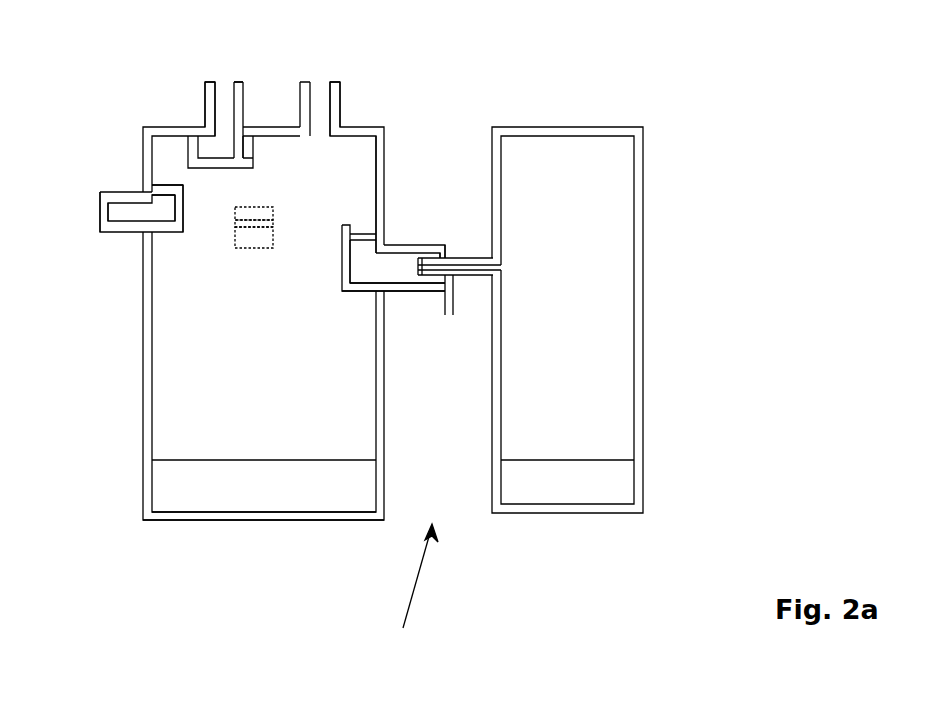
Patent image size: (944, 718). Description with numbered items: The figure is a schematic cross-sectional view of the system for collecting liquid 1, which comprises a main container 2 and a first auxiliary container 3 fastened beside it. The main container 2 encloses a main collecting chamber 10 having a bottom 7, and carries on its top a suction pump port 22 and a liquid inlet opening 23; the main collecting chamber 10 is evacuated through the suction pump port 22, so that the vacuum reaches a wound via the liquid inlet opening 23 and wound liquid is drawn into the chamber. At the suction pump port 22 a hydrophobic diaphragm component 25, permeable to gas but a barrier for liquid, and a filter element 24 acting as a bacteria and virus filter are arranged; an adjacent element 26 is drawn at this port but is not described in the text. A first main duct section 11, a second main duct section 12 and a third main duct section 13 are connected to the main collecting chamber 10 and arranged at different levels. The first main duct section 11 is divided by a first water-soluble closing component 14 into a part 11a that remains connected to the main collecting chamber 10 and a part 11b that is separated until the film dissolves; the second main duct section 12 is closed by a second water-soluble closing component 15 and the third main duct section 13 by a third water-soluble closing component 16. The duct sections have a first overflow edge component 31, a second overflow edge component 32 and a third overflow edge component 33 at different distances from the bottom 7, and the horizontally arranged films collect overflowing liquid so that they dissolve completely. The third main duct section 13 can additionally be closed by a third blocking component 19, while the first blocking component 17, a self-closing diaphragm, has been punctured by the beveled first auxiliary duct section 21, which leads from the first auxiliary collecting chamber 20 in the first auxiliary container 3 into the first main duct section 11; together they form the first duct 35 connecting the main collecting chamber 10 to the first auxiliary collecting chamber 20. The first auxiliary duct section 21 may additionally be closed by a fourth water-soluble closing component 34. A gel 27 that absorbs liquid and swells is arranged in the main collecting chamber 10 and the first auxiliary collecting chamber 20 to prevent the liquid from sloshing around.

The system for collecting liquid 1 is at (415, 586).
The main container 2 is at (145, 390).
The first auxiliary container 3 is at (637, 322).
The bottom 7 is at (265, 511).
The main collecting chamber 10 is at (173, 327).
The first main duct section 11 is at (403, 247).
The first part of the first main duct section 11a is at (370, 230).
The second part of the first main duct section 11b is at (370, 265).
The second main duct section 12 is at (254, 243).
The third main duct section 13 is at (115, 195).
The first water-soluble closing component 14 is at (362, 232).
The second water-soluble closing component 15 is at (271, 224).
The third water-soluble closing component 16 is at (160, 190).
The first blocking component 17 is at (440, 247).
The third blocking component 19 is at (100, 215).
The first auxiliary collecting chamber 20 is at (618, 247).
The first auxiliary duct section 21 is at (453, 282).
The suction pump port 22 is at (208, 98).
The liquid inlet opening 23 is at (335, 112).
The filter element 24 is at (237, 148).
The hydrophobic diaphragm component 25 is at (230, 157).
The cup wall 26 is at (257, 147).
The gel 27 is at (180, 483).
The first overflow edge component 31 is at (343, 238).
The second overflow edge component 32 is at (238, 222).
The third overflow edge component 33 is at (185, 195).
The fourth water-soluble closing component 34 is at (444, 298).
The first duct 35 is at (378, 283).